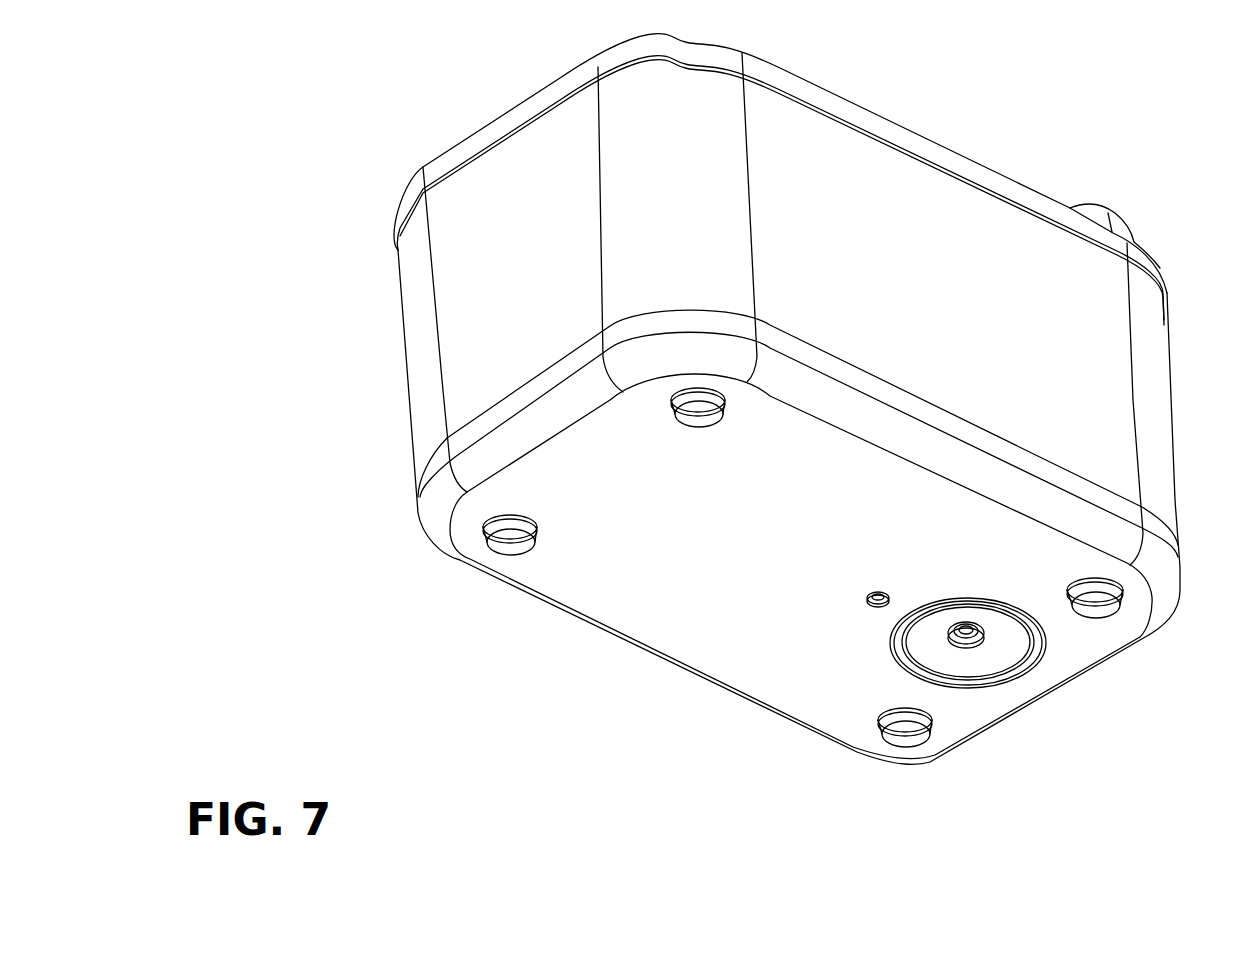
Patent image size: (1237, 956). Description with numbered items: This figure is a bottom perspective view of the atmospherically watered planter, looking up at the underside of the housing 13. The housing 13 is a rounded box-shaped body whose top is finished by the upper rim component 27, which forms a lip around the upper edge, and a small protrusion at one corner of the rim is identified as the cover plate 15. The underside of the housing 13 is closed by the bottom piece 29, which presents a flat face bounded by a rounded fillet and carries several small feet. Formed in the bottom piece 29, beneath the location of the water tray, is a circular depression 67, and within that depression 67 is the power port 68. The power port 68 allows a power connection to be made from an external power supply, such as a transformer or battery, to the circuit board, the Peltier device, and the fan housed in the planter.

The housing 13 is at (403, 345).
The cover plate 15 is at (1121, 207).
The upper rim component 27 is at (387, 210).
The bottom piece 29 is at (417, 513).
The depression 67 is at (960, 658).
The power port 68 is at (983, 630).